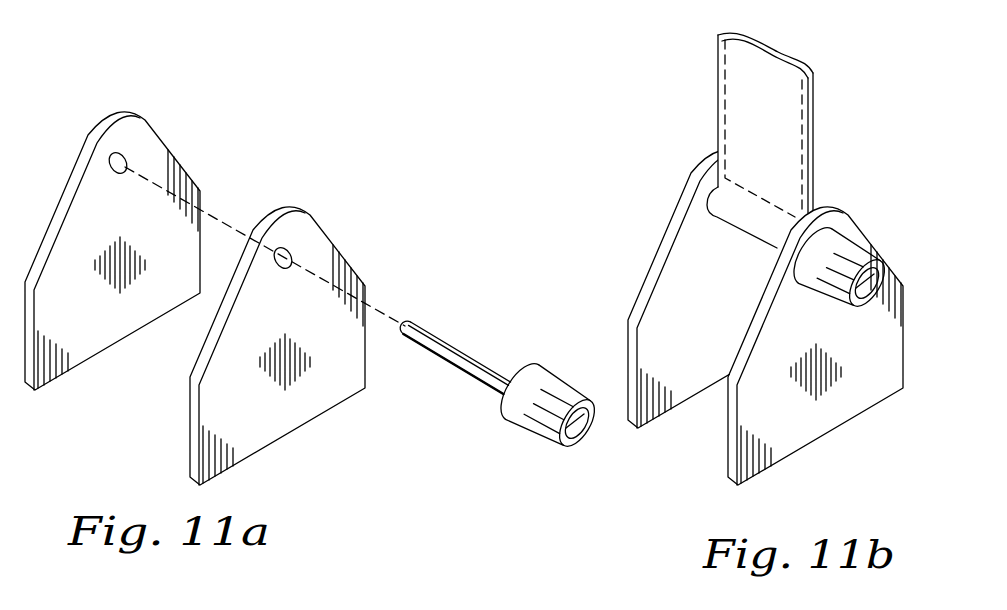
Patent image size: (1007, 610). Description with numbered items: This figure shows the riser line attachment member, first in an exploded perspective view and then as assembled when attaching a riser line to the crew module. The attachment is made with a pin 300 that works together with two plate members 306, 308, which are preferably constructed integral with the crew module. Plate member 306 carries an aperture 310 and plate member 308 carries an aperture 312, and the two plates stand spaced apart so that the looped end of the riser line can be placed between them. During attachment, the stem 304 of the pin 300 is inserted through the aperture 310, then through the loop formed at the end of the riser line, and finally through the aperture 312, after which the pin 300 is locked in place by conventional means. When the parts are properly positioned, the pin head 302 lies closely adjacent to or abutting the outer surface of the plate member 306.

In FIG. 11A, the pin 300 is at (512, 278).
In FIG. 11A, the pin head 302 is at (556, 377).
In FIG. 11B, the pin head 302 is at (840, 237).
In FIG. 11A, the stem 304 is at (460, 342).
In FIG. 11A, the plate member 306 is at (323, 388).
In FIG. 11B, the plate member 306 is at (862, 388).
In FIG. 11A, the plate member 308 is at (90, 333).
In FIG. 11B, the plate member 308 is at (680, 268).
In FIG. 11A, the aperture 310 is at (292, 255).
In FIG. 11A, the aperture 312 is at (128, 162).